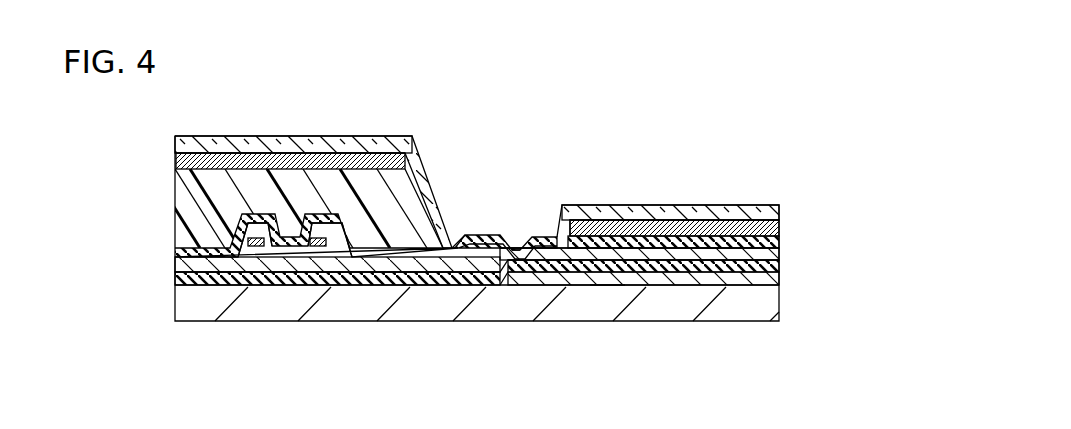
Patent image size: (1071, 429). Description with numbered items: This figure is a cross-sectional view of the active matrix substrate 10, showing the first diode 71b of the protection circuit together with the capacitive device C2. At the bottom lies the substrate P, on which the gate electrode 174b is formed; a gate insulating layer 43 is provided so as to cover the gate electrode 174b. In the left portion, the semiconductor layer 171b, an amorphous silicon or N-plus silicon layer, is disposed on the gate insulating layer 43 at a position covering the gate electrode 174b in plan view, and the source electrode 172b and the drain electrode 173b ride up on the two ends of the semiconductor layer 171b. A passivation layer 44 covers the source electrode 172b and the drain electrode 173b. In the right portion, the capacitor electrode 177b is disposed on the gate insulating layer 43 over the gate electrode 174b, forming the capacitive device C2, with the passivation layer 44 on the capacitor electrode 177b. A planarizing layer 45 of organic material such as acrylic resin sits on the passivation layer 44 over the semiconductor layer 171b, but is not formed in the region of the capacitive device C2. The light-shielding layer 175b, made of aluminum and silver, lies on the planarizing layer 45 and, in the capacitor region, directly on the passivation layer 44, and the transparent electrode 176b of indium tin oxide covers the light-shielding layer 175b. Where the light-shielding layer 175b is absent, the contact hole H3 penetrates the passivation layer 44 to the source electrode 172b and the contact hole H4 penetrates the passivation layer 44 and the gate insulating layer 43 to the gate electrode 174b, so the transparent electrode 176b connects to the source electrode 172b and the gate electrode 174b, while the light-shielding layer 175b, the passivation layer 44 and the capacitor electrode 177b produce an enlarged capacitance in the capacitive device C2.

The active matrix substrate 10 is at (737, 120).
The substrate P is at (775, 307).
The gate insulating layer 43 is at (195, 284).
The passivation layer 44 is at (196, 262).
The planarizing layer 45 is at (176, 213).
The first diode 71b is at (506, 160).
The contact hole H3 is at (450, 250).
The contact hole H4 is at (528, 252).
The capacitive device C2 is at (606, 293).
The semiconductor layer 171b is at (262, 254).
The source electrode 172b is at (387, 265).
The drain electrode 173b is at (208, 258).
The gate electrode 174b is at (315, 263).
The light-shielding layer 175b is at (176, 160).
The transparent electrode 176b is at (176, 142).
The capacitor electrode 177b is at (658, 254).